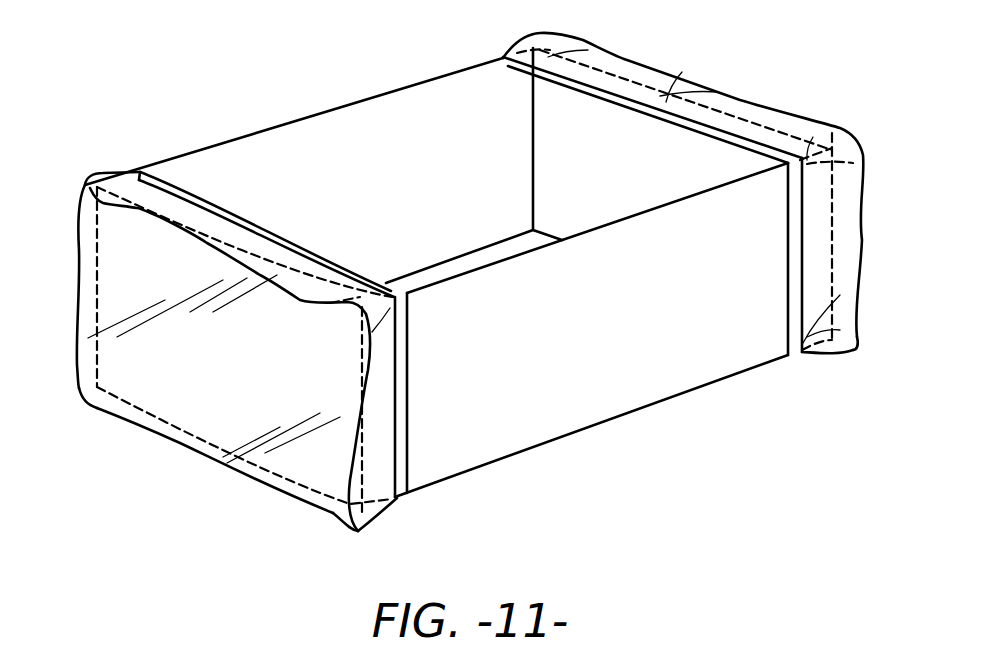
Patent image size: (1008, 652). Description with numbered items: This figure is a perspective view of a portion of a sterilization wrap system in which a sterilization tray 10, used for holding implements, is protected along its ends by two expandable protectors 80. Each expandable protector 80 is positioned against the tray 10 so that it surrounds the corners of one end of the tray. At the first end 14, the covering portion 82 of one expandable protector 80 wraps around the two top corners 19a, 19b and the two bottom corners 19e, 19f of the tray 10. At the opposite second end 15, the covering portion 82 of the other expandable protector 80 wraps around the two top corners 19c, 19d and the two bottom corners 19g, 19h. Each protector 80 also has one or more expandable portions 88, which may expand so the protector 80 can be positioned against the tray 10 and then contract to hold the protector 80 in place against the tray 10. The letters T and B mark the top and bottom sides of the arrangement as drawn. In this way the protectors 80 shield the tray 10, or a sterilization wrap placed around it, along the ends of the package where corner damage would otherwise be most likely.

The sterilization tray 10 is at (364, 135).
The first end 14 is at (168, 474).
The second end 15 is at (872, 257).
The top corner 19a is at (92, 183).
The top corner 19b is at (360, 306).
The top corner 19c is at (835, 132).
The top corner 19d is at (532, 37).
The bottom corner 19e is at (82, 398).
The bottom corner 19f is at (369, 517).
The bottom corner 19g is at (850, 354).
The bottom corner 19h is at (540, 228).
The expandable protector 80 is at (630, 50).
The covering portion 82 is at (740, 100).
The expandable portion 88 is at (263, 225).
The top panel T is at (62, 207).
The bottom panel B is at (52, 395).